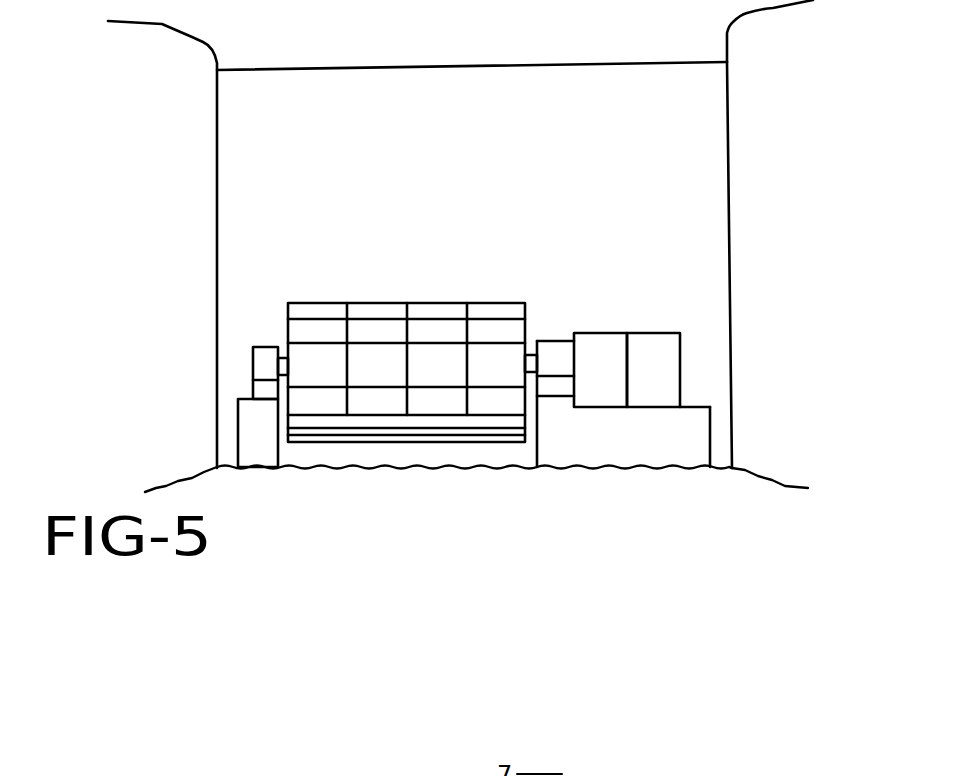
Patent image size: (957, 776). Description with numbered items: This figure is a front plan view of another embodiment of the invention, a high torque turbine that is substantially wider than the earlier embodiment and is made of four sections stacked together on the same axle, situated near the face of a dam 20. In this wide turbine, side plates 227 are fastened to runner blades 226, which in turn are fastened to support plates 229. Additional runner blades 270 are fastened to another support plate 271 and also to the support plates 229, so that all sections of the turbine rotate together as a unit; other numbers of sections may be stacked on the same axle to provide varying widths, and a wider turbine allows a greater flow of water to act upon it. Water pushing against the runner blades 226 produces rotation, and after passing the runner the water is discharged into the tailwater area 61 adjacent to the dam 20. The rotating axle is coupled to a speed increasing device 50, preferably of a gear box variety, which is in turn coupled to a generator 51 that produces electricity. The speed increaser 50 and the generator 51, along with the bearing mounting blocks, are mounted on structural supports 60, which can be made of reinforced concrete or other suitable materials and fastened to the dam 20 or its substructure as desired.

The dam 20 is at (633, 147).
The tailwater area 61 is at (735, 538).
The side plates 227 is at (288, 336).
The additional runner blades 270 is at (350, 318).
The runner blades 226 is at (320, 413).
The support plates 229 is at (347, 410).
The support plate 271 is at (407, 413).
The speed increasing device 50 is at (590, 338).
The generator 51 is at (638, 340).
The structural supports 60 is at (687, 431).